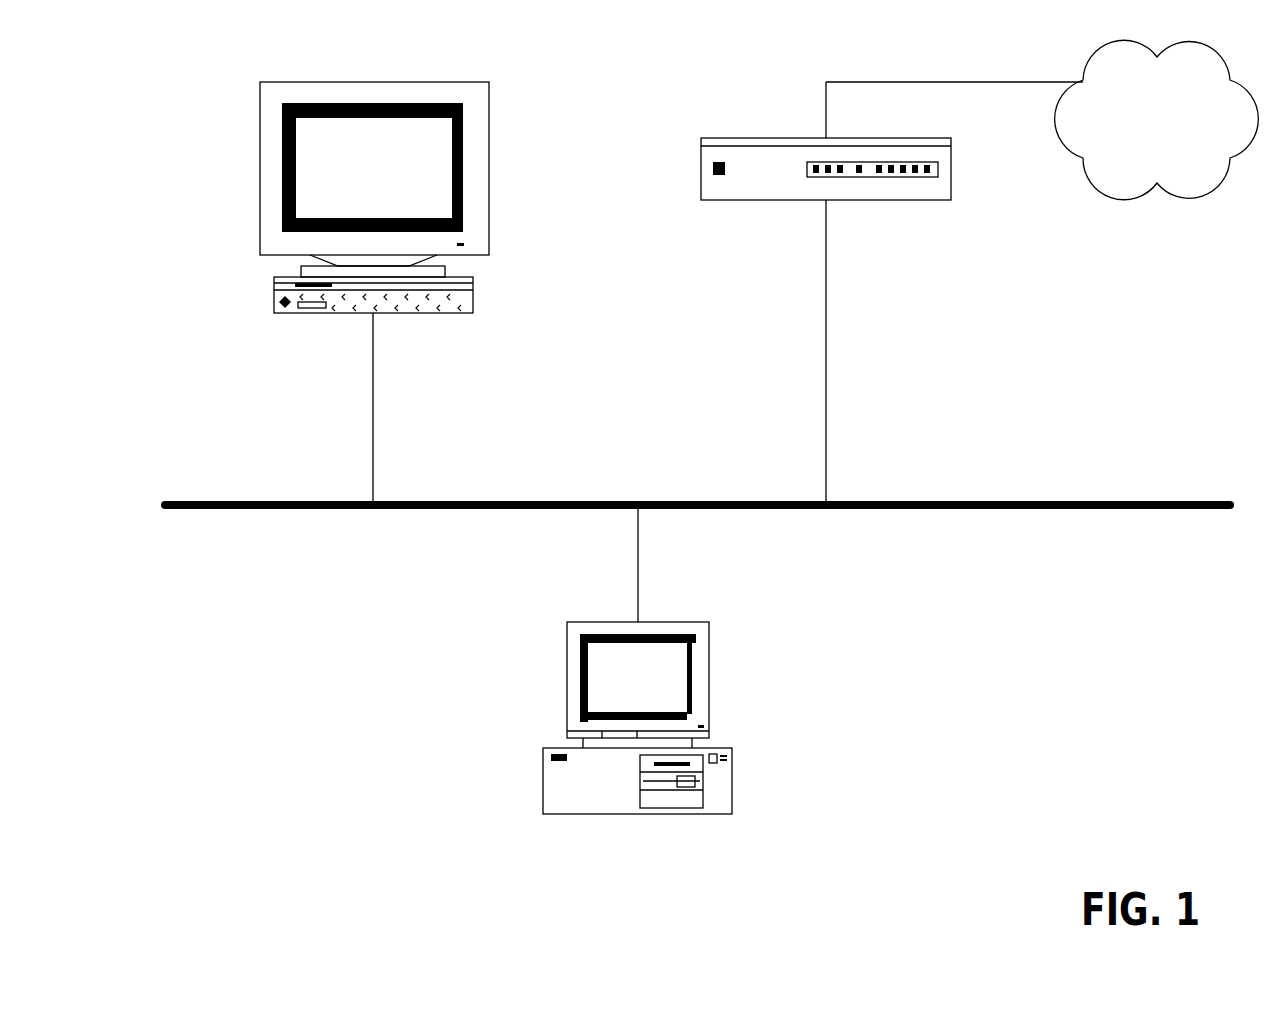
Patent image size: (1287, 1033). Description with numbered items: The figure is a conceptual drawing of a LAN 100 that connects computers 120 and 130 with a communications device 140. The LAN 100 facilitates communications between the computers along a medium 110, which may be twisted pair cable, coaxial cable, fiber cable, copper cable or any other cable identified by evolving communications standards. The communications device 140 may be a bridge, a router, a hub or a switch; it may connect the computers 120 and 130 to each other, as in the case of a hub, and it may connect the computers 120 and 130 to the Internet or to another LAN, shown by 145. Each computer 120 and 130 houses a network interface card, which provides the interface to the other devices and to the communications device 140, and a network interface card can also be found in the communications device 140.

The LAN 100 is at (257, 699).
The medium 110 is at (1000, 501).
The computer 120 is at (450, 82).
The computer 130 is at (710, 665).
The communications device 140 is at (885, 202).
The Internet or another LAN 145 is at (1127, 198).